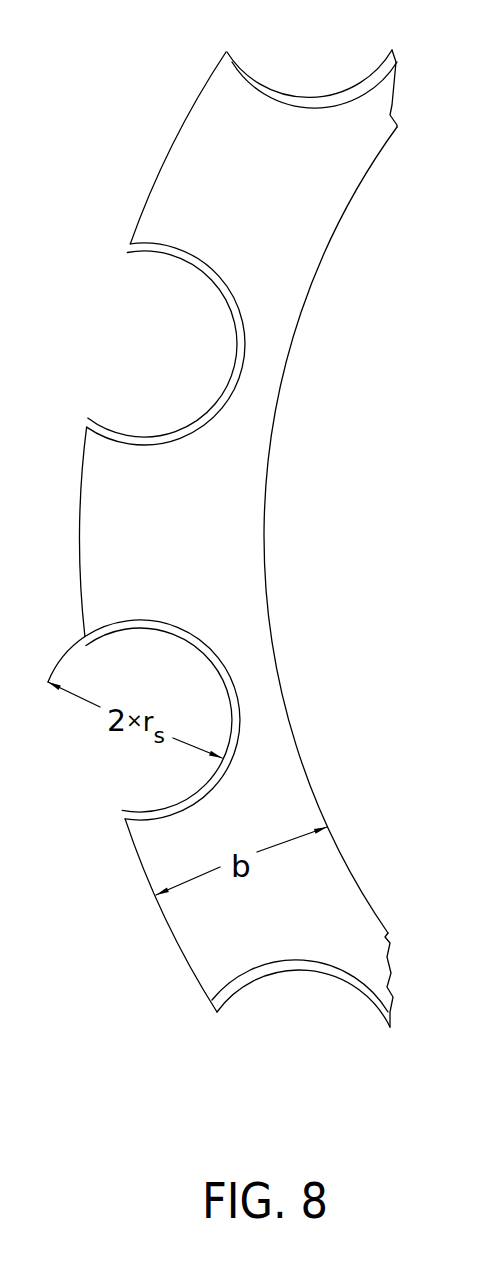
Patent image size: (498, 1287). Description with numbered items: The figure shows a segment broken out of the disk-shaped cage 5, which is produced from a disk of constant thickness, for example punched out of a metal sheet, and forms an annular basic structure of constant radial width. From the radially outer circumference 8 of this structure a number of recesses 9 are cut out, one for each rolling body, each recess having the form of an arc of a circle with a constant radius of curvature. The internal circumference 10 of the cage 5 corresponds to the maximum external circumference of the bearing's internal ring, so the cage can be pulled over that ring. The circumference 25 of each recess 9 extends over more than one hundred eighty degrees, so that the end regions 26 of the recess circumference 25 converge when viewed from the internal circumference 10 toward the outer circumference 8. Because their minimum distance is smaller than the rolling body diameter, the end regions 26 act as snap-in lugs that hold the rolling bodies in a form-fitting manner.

The cage 5 is at (178, 100).
The radially outer circumference 8 is at (190, 967).
The recess 9 is at (300, 970).
The internal circumference 10 is at (267, 543).
The circumference of a recess 25 is at (197, 413).
The end regions 26 is at (133, 252).